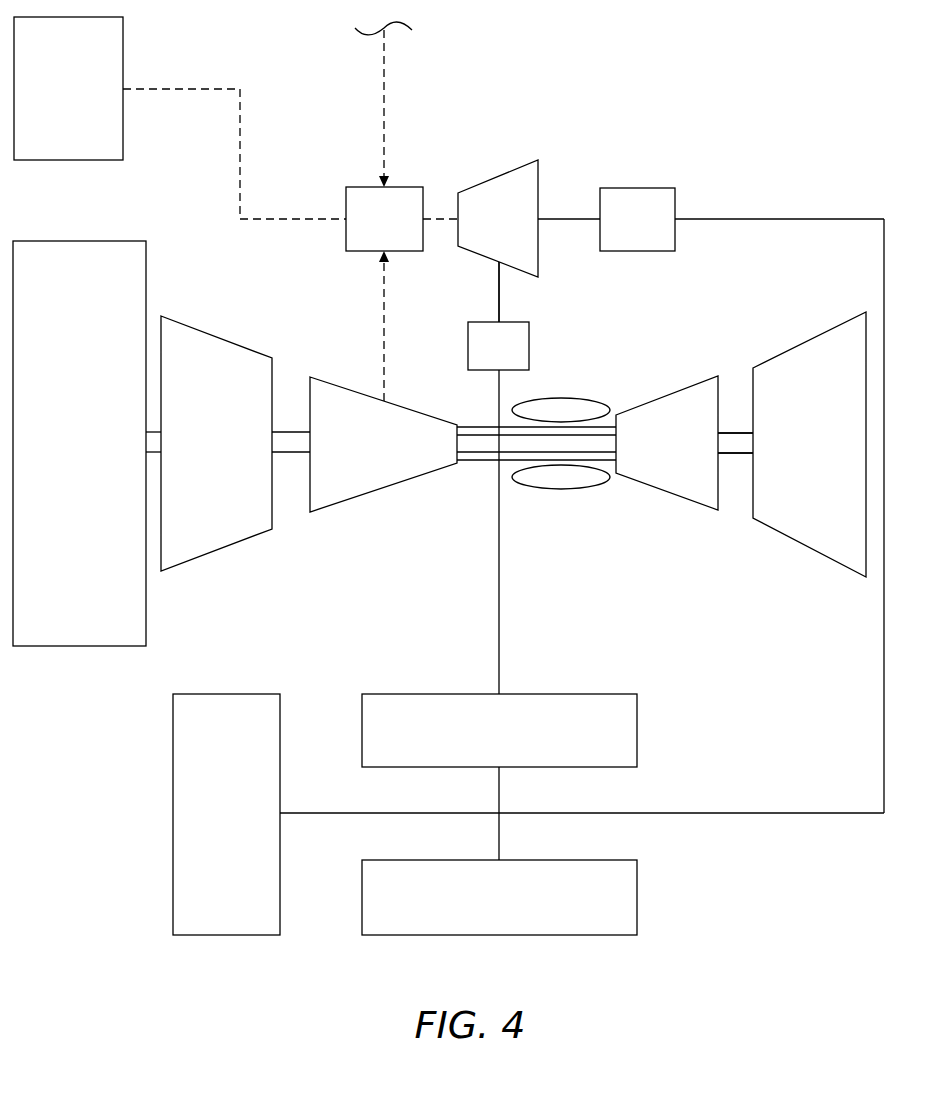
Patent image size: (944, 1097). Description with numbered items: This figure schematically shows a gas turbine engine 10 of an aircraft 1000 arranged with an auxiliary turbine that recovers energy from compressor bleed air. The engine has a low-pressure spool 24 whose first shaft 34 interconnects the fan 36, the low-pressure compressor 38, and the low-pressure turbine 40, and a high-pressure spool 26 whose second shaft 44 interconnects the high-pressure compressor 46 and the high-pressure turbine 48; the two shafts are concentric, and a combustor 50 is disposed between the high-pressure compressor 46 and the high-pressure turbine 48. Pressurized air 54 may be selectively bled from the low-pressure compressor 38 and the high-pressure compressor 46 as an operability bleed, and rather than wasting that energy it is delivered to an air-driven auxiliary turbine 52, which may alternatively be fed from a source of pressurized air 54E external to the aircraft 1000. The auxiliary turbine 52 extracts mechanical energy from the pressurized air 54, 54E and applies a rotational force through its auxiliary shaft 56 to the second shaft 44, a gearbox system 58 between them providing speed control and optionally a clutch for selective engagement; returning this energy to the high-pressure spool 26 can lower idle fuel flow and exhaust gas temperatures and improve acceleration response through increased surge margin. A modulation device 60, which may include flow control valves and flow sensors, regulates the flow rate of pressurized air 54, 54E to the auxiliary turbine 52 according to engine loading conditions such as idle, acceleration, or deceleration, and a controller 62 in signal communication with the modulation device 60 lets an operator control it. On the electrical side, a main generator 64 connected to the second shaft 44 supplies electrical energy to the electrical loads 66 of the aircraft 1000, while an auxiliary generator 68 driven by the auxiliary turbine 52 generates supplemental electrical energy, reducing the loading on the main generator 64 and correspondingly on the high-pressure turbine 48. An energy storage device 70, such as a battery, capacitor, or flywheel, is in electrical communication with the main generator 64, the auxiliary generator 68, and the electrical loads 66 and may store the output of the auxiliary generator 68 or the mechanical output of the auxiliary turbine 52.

The gas turbine engine 10 is at (684, 672).
The aircraft 1000 is at (718, 153).
The low-pressure spool 24 is at (737, 470).
The high-pressure spool 26 is at (460, 474).
The first shaft 34 is at (736, 432).
The fan 36 is at (59, 467).
The low-pressure compressor 38 is at (202, 455).
The low-pressure turbine 40 is at (799, 455).
The second shaft 44 is at (482, 464).
The high-pressure compressor 46 is at (357, 456).
The high-pressure turbine 48 is at (657, 455).
The combustor 50 is at (568, 490).
The auxiliary turbine 52 is at (482, 235).
The pressurized air 54 is at (383, 324).
The source of pressurized air external to the aircraft 54E is at (382, 102).
The auxiliary shaft 56 is at (501, 294).
The gearbox system 58 is at (482, 357).
The modulation device 60 is at (368, 230).
The controller 62 is at (51, 95).
The main generator 64 is at (482, 743).
The electrical loads 66 is at (482, 908).
The auxiliary generator 68 is at (621, 230).
The energy storage device 70 is at (211, 826).